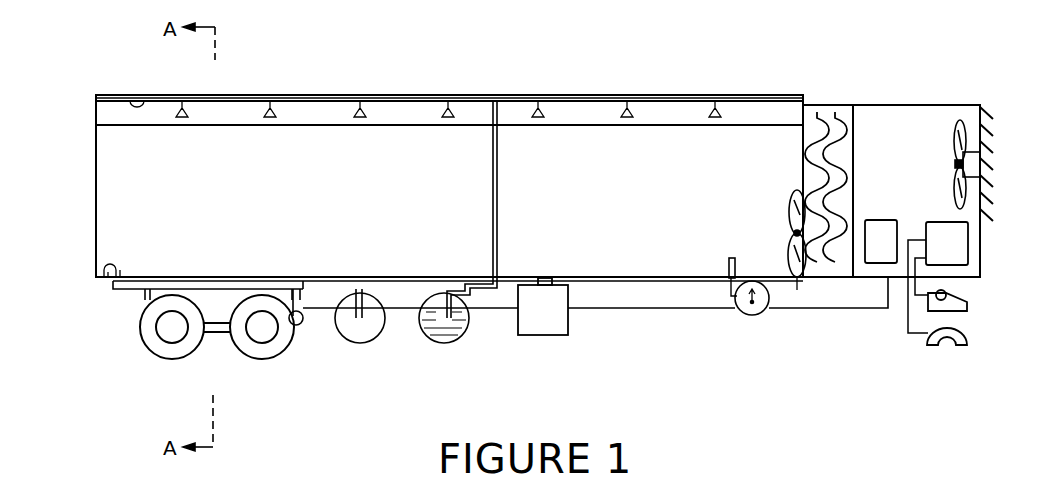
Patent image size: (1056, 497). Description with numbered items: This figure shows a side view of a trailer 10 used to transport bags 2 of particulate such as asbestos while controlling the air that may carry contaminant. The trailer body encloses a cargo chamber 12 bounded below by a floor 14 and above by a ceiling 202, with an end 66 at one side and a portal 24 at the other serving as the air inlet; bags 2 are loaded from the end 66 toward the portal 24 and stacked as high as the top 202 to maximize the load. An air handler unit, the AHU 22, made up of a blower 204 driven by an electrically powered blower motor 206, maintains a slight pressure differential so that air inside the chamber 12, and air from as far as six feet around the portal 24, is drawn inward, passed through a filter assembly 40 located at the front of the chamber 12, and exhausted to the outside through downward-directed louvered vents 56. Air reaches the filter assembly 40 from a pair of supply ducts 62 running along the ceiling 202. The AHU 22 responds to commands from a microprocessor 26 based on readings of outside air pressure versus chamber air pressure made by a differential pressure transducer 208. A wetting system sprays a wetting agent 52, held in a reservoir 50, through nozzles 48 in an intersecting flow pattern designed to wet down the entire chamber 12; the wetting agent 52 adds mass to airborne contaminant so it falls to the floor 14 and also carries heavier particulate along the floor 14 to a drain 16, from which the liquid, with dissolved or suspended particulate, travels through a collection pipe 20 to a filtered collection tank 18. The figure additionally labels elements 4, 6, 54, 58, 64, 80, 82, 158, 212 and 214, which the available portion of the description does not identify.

The bags 2 is at (799, 278).
The conduit 4 is at (299, 325).
The wheels 6 is at (236, 357).
The trailer 10 is at (402, 90).
The cargo chamber 12 is at (122, 160).
The floor 14 is at (400, 273).
The drain 16 is at (104, 279).
The filtered collection tank 18 is at (356, 344).
The collection pipe 20 is at (230, 286).
The air handler unit 22 is at (947, 158).
The portal 24 is at (96, 218).
The microprocessor 26 is at (966, 245).
The filter assembly 40 is at (826, 110).
The nozzles 48 is at (623, 115).
The reservoir 50 is at (444, 344).
The wetting agent 52 is at (463, 330).
The partition 54 is at (498, 213).
The louvered vents 56 is at (994, 168).
The supply conduit 58 is at (478, 293).
The supply ducts 62 is at (303, 96).
The compressor 64 is at (880, 228).
The end 66 is at (803, 183).
The foot switch 80 is at (969, 299).
The outlet 82 is at (967, 341).
The pump 158 is at (568, 329).
The ceiling 202 is at (143, 100).
The blower 204 is at (965, 119).
The blower motor 206 is at (969, 161).
The differential pressure transducer 208 is at (770, 301).
The pressure probe 212 is at (729, 264).
The pressure tube 214 is at (723, 292).